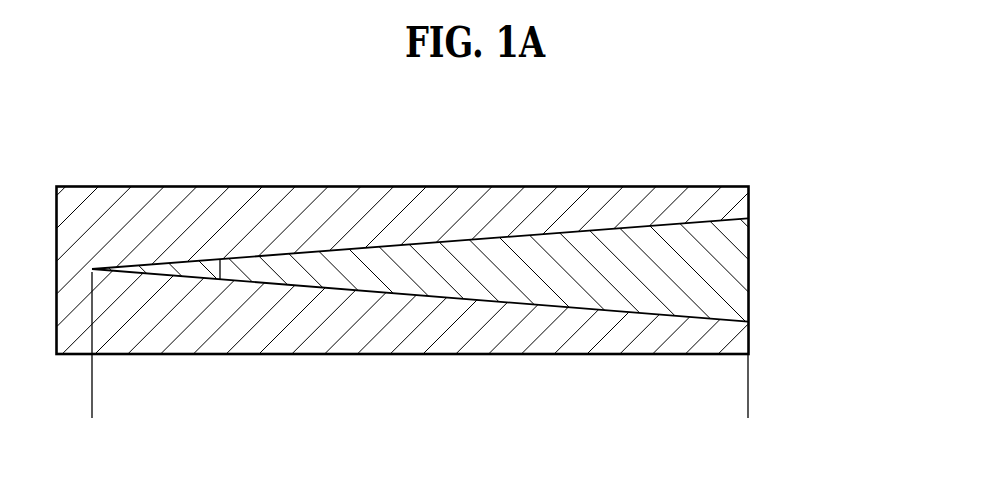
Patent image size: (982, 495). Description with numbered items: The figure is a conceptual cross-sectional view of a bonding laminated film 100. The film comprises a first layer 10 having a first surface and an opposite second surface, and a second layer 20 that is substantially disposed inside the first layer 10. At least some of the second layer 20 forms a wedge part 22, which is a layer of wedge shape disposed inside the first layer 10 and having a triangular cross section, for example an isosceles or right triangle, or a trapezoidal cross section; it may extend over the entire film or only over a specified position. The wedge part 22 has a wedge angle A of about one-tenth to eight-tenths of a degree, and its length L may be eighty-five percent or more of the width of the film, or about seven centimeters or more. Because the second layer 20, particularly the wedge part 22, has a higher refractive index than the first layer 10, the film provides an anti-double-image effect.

The bonding laminated film 100 is at (157, 152).
The first layer 10 is at (699, 202).
The second layer 20 is at (450, 240).
The wedge part 22 is at (617, 262).
The wedge angle A is at (220, 260).
The length of the wedge part L is at (746, 409).